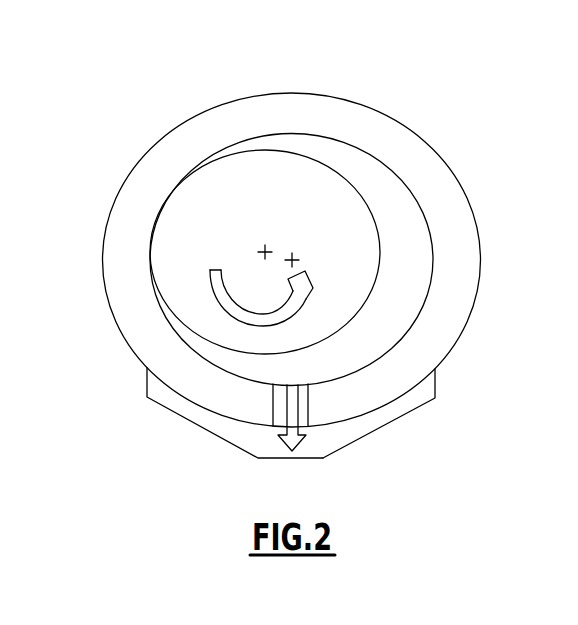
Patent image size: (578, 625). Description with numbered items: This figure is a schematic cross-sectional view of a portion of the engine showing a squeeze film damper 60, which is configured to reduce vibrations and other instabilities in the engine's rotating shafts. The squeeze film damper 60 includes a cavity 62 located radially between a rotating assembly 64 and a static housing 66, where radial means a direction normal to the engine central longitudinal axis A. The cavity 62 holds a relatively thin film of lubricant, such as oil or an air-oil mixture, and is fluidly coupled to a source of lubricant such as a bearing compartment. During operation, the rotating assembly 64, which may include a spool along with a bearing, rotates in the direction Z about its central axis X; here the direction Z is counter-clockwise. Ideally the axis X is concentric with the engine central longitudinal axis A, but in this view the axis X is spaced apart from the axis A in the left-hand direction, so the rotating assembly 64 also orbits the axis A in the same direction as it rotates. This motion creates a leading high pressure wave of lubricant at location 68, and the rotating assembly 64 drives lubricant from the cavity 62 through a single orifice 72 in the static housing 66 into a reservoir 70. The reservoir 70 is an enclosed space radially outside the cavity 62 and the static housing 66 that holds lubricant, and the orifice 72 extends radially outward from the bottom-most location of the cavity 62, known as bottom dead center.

The squeeze film damper 60 is at (143, 123).
The cavity 62 is at (298, 152).
The rotating assembly 64 is at (185, 208).
The static housing 66 is at (453, 209).
The location of leading high pressure wave 68 is at (258, 371).
The reservoir 70 is at (366, 428).
The orifice 72 is at (309, 407).
The central axis of rotating assembly X is at (262, 250).
The engine central longitudinal axis A is at (293, 259).
The rotation direction Z is at (212, 285).